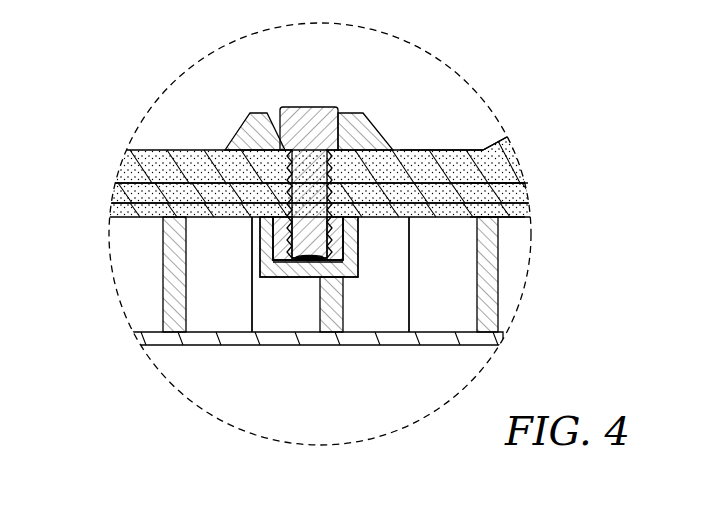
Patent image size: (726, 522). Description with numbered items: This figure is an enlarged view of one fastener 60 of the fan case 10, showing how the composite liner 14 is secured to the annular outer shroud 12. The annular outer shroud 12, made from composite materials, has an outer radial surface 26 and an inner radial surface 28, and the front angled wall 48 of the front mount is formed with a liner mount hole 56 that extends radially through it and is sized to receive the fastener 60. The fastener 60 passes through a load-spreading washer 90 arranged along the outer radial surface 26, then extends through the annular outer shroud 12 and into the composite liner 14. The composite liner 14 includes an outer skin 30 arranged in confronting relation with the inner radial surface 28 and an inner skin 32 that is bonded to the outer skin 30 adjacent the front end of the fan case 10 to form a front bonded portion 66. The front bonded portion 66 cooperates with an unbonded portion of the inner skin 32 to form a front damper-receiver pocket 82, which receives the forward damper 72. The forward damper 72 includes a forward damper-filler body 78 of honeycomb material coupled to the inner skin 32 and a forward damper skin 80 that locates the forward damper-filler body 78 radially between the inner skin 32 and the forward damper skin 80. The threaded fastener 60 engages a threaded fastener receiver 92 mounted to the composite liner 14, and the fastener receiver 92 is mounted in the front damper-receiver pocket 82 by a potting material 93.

The fan case 10 is at (622, 90).
The annular outer shroud 12 is at (522, 140).
The composite liner 14 is at (544, 276).
The outer radial surface 26 is at (157, 150).
The inner radial surface 28 is at (320, 193).
The outer skin 30 is at (518, 194).
The inner skin 32 is at (524, 218).
The front angled wall 48 is at (427, 158).
The liner mount hole 56 is at (290, 167).
The fastener 60 is at (312, 124).
The front bonded portion 66 is at (320, 210).
The forward damper 72 is at (210, 382).
The forward damper-filler body 78 is at (490, 308).
The forward damper skin 80 is at (301, 338).
The front damper-receiver pocket 82 is at (200, 270).
The load-spreading washer 90 is at (375, 138).
The threaded fastener receiver 92 is at (282, 242).
The potting material 93 is at (352, 267).